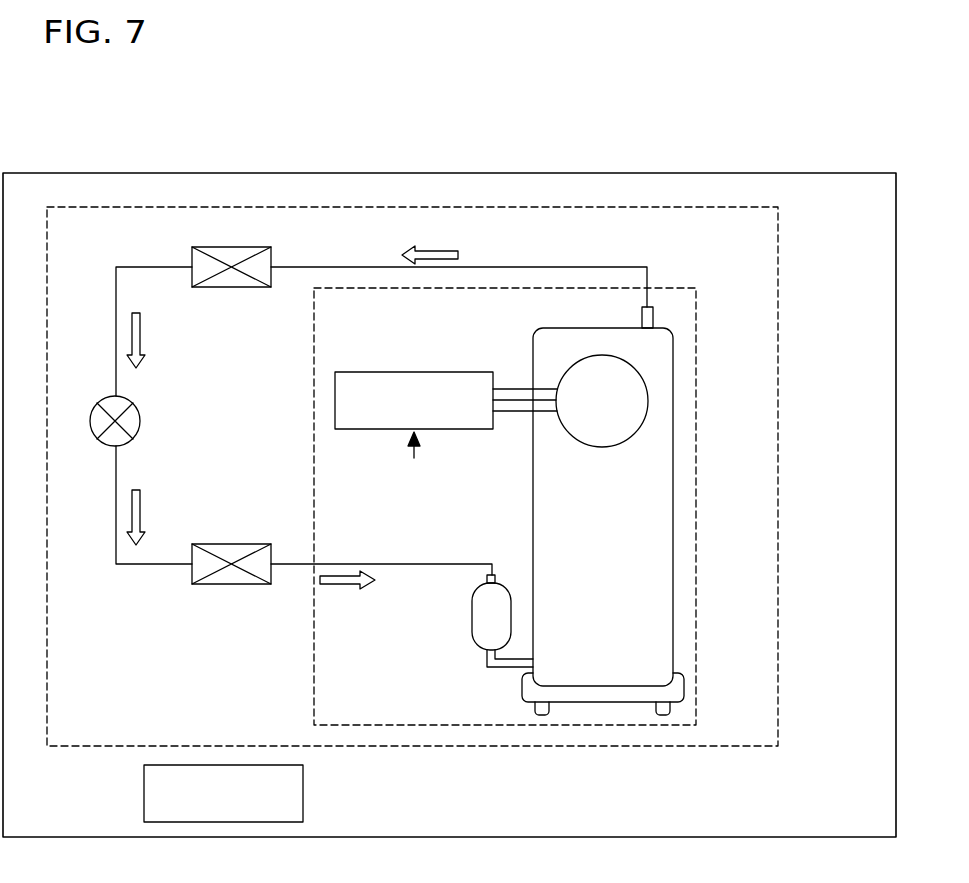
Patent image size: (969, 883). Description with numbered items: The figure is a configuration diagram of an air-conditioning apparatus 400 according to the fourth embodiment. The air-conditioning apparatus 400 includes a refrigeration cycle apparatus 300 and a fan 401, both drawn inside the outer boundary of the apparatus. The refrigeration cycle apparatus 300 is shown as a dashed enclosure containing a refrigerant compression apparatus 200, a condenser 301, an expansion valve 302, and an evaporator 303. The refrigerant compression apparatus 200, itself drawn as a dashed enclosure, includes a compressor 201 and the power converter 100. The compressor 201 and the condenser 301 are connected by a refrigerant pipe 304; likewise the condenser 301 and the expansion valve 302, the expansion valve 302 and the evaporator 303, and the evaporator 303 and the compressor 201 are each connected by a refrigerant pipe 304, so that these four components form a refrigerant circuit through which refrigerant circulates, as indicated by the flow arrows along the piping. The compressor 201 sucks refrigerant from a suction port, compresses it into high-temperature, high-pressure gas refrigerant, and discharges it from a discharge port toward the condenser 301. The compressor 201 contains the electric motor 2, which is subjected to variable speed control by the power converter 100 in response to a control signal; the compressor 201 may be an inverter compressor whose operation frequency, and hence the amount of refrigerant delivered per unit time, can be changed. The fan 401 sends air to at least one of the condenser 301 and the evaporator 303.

The air-conditioning apparatus 400 is at (812, 172).
The refrigeration cycle apparatus 300 is at (780, 287).
The refrigerant compression apparatus 200 is at (698, 313).
The compressor 201 is at (673, 430).
The electric motor 2 is at (648, 388).
The power converter 100 is at (443, 372).
The condenser 301 is at (222, 247).
The expansion valve 302 is at (142, 420).
The evaporator 303 is at (215, 543).
The refrigerant pipe 304 is at (116, 343).
The fan 401 is at (303, 793).